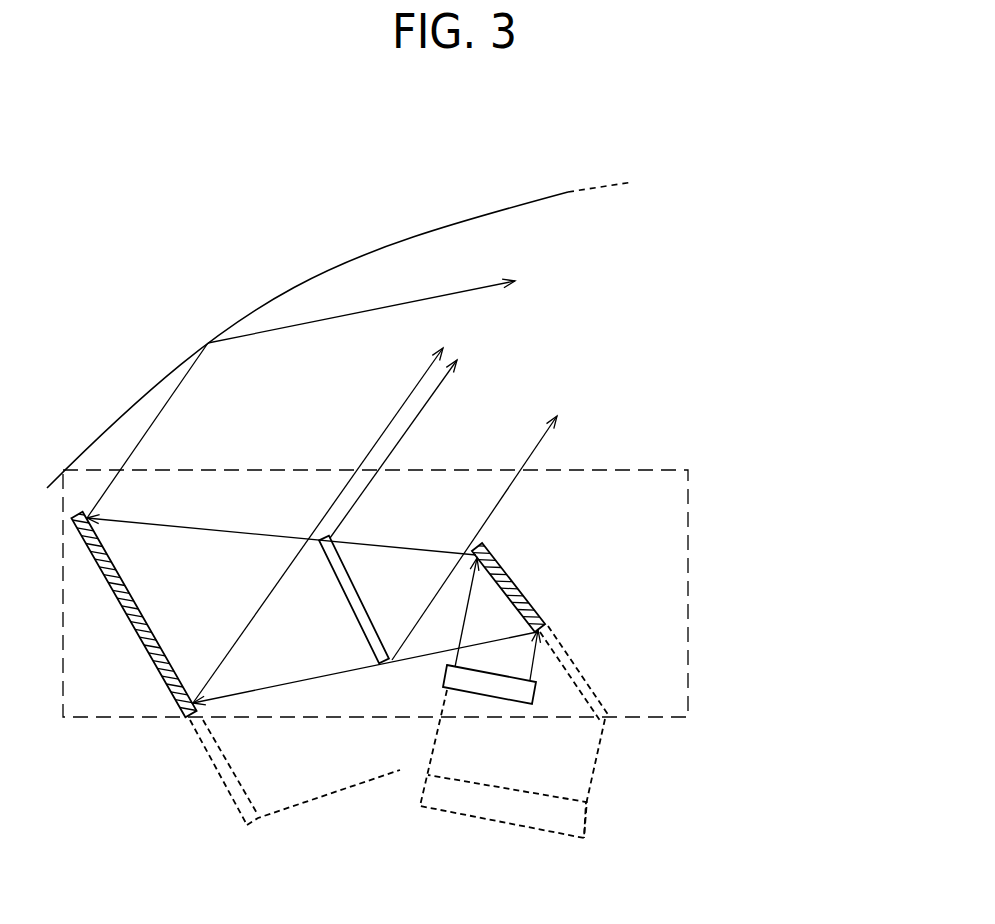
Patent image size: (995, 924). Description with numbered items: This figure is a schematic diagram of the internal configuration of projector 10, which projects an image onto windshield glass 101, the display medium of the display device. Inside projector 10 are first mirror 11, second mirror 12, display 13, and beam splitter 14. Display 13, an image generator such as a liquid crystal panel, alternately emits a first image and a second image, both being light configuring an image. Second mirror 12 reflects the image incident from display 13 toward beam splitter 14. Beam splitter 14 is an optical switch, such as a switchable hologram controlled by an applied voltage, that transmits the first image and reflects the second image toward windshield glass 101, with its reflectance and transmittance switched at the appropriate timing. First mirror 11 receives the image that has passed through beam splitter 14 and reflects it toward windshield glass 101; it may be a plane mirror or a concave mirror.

The windshield glass 101 is at (292, 287).
The projector 10 is at (688, 470).
The first mirror 11 is at (148, 652).
The second mirror 12 is at (517, 580).
The display 13 is at (537, 693).
The beam splitter 14 is at (380, 668).